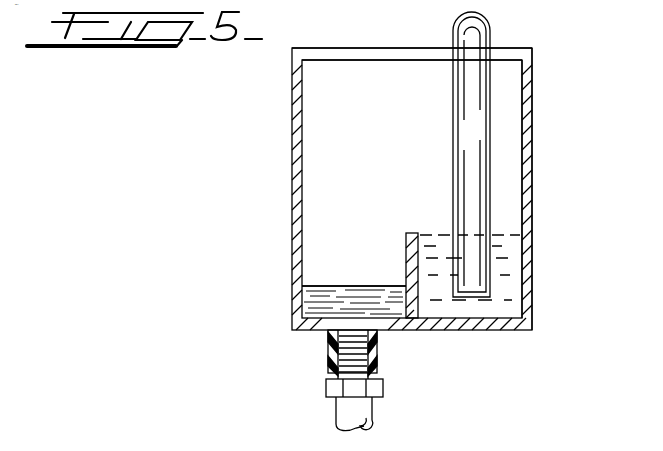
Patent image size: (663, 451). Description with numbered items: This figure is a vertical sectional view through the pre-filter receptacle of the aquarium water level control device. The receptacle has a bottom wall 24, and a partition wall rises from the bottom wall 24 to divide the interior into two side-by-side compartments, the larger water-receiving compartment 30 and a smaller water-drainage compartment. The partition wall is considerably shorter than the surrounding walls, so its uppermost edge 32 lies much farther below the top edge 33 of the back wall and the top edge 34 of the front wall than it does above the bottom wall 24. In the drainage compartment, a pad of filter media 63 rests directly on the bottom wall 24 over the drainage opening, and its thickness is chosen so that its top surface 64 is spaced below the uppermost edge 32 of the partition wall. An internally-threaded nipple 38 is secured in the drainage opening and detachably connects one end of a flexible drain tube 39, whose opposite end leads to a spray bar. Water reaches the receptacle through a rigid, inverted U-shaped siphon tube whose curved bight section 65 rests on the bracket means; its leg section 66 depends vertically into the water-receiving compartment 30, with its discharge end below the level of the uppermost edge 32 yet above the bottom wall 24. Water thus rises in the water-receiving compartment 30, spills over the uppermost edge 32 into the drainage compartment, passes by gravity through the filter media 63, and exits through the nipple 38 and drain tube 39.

The bottom wall 24 is at (470, 325).
The water-receiving compartment 30 is at (506, 263).
The uppermost edge of the partition wall 32 is at (413, 233).
The top edge of the back wall 33 is at (370, 60).
The top edge of the front wall 34 is at (531, 56).
The internally-threaded nipple 38 is at (330, 350).
The flexible drain tube 39 is at (340, 412).
The filter media layer 63 is at (330, 303).
The top surface of the filter layer 64 is at (332, 285).
The curved bight section 65 is at (492, 13).
The siphon tube leg section 66 is at (470, 106).